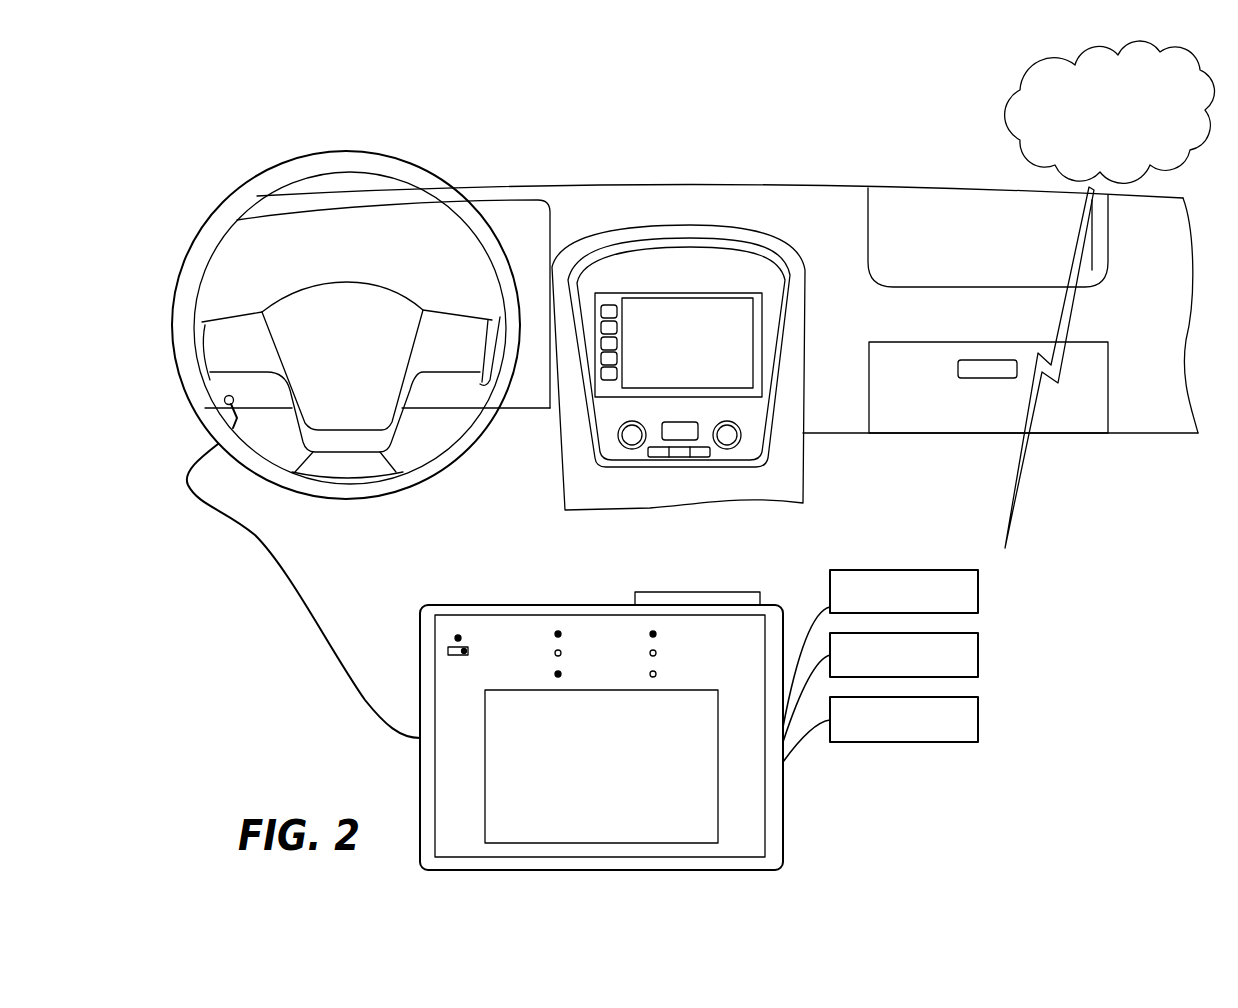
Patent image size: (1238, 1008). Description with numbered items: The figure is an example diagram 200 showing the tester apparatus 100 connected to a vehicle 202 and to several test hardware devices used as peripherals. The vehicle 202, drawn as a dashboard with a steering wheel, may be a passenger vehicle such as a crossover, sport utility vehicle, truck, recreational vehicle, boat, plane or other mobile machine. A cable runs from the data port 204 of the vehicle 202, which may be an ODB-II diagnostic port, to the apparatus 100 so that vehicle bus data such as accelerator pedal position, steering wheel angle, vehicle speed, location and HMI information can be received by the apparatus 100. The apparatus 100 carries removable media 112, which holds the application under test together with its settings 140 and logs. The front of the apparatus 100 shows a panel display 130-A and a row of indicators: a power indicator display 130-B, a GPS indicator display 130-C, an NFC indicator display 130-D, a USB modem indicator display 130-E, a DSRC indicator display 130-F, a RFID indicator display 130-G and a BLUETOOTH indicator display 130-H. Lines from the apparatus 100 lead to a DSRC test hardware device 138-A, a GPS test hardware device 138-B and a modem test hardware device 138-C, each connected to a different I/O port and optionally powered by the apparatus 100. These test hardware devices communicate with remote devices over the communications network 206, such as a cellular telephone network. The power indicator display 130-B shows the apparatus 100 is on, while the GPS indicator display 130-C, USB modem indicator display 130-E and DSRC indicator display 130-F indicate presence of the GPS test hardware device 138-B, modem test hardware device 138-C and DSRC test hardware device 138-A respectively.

The diagram 200 is at (174, 74).
The vehicle 202 is at (710, 182).
The data port 204 is at (224, 400).
The communications network 206 is at (1013, 104).
The tester apparatus 100 is at (512, 604).
The removable media 112 is at (702, 592).
The panel display 130-A is at (680, 690).
The power indicator display 130-B is at (455, 634).
The GPS indicator display 130-C is at (552, 634).
The NFC indicator display 130-D is at (552, 653).
The USB modem indicator display 130-E is at (552, 674).
The DSRC indicator display 130-F is at (647, 634).
The RFID indicator display 130-G is at (647, 653).
The BLUETOOTH indicator display 130-H is at (647, 674).
The DSRC test hardware device 138-A is at (985, 584).
The GPS test hardware device 138-B is at (985, 656).
The modem test hardware device 138-C is at (985, 719).
The settings 140 is at (446, 650).